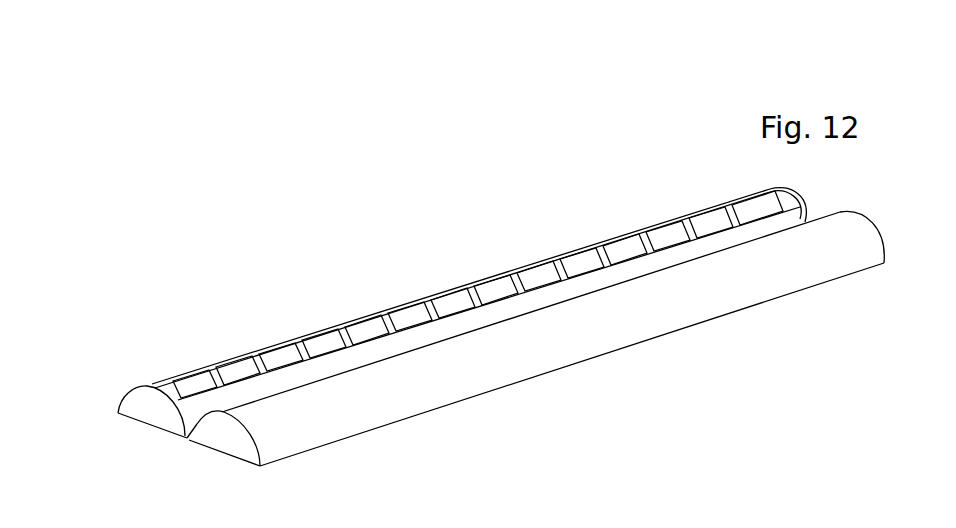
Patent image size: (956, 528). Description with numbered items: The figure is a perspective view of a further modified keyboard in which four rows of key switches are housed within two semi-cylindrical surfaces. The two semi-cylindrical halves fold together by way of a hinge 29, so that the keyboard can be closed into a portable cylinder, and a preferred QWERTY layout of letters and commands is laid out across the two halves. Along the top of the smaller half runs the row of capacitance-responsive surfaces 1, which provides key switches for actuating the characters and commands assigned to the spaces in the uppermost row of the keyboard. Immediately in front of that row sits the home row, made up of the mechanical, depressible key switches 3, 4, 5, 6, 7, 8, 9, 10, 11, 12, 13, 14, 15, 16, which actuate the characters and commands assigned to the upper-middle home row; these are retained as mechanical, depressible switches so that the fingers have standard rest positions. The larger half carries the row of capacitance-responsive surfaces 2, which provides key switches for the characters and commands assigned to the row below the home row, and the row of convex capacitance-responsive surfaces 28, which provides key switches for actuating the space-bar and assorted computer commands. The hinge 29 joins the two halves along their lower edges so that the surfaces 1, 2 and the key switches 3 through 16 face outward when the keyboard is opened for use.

The row of capacitance-responsive surfaces 1 is at (131, 388).
The row of capacitance-responsive surfaces 2 is at (210, 414).
The mechanical depressible key switch 3 is at (180, 379).
The mechanical depressible key switch 4 is at (224, 365).
The mechanical depressible key switch 5 is at (267, 351).
The mechanical depressible key switch 6 is at (311, 338).
The mechanical depressible key switch 7 is at (354, 324).
The mechanical depressible key switch 8 is at (398, 310).
The mechanical depressible key switch 9 is at (442, 296).
The mechanical depressible key switch 10 is at (485, 283).
The mechanical depressible key switch 11 is at (529, 269).
The mechanical depressible key switch 12 is at (572, 255).
The mechanical depressible key switch 13 is at (616, 242).
The mechanical depressible key switch 14 is at (660, 228).
The mechanical depressible key switch 15 is at (703, 214).
The mechanical depressible key switch 16 is at (747, 200).
The row of convex capacitance-responsive surfaces 28 is at (522, 362).
The hinge 29 is at (187, 438).